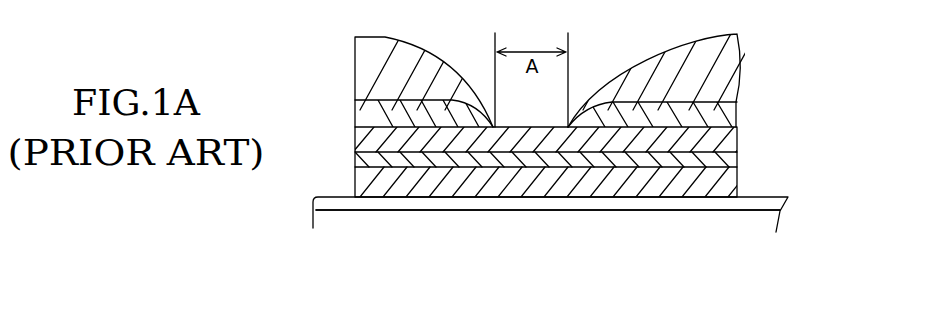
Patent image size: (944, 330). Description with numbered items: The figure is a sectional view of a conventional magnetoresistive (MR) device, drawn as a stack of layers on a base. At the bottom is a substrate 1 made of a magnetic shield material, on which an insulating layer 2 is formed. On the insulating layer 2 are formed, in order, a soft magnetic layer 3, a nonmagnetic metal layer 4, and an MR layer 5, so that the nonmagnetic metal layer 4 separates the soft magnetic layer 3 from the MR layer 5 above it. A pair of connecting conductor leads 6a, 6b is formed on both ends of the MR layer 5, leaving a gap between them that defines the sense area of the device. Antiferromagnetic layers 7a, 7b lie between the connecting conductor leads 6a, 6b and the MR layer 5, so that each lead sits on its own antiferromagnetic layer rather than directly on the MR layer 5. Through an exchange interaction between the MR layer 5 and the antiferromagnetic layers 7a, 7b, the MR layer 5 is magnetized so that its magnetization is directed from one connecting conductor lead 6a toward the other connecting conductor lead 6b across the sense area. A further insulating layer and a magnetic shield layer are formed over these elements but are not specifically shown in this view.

The substrate 1 is at (776, 228).
The insulating layer 2 is at (652, 205).
The soft magnetic layer 3 is at (725, 190).
The nonmagnetic metal layer 4 is at (720, 162).
The MR layer 5 is at (723, 146).
The connecting conductor lead 6a is at (355, 64).
The connecting conductor lead 6b is at (738, 78).
The antiferromagnetic layer 7a is at (355, 112).
The antiferromagnetic layer 7b is at (738, 112).